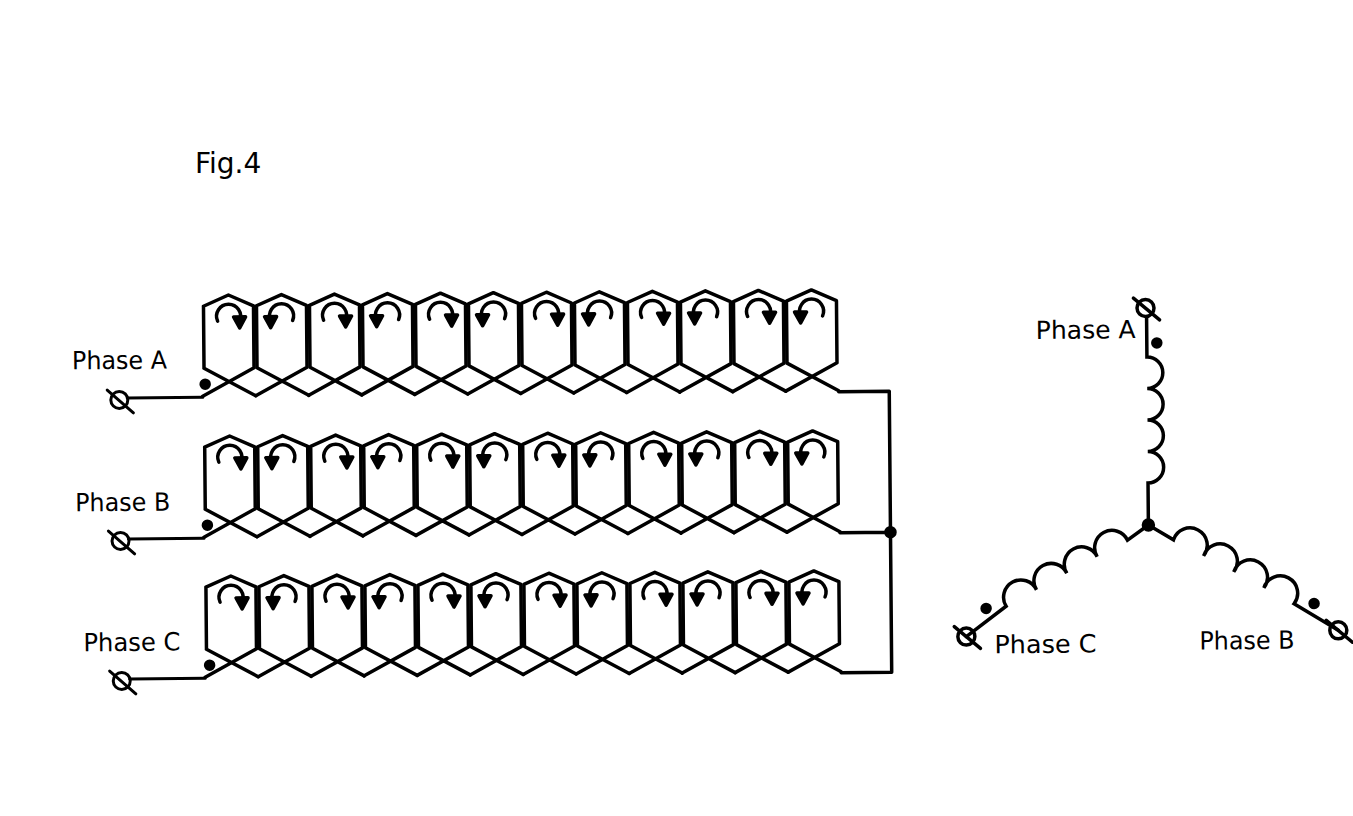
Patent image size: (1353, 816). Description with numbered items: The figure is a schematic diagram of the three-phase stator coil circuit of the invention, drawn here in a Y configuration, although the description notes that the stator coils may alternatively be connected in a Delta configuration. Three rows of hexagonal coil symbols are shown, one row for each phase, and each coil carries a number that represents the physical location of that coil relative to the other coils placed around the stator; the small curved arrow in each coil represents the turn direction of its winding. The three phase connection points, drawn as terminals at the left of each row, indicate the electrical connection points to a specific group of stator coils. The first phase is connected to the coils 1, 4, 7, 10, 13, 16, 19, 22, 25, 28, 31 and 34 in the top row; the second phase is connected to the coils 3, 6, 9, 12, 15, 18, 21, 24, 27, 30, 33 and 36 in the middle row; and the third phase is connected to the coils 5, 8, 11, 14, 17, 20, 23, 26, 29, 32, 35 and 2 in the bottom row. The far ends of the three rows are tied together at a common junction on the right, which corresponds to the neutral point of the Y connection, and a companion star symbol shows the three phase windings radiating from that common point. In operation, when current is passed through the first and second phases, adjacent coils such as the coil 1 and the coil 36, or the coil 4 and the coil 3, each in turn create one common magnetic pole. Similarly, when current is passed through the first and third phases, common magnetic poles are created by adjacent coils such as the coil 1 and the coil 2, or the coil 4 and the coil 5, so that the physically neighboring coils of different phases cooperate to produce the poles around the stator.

The stator coil 1 is at (229, 345).
The stator coil 2 is at (814, 621).
The stator coil 3 is at (230, 486).
The stator coil 4 is at (282, 344).
The stator coil 5 is at (231, 626).
The stator coil 6 is at (283, 485).
The stator coil 7 is at (335, 344).
The stator coil 8 is at (284, 625).
The stator coil 9 is at (336, 485).
The stator coil 10 is at (388, 343).
The stator coil 11 is at (337, 625).
The stator coil 12 is at (389, 484).
The stator coil 13 is at (441, 343).
The stator coil 14 is at (390, 624).
The stator coil 15 is at (442, 484).
The stator coil 16 is at (494, 342).
The stator coil 17 is at (443, 624).
The stator coil 18 is at (495, 483).
The stator coil 19 is at (547, 342).
The stator coil 20 is at (496, 623).
The stator coil 21 is at (548, 483).
The stator coil 22 is at (600, 342).
The stator coil 23 is at (549, 623).
The stator coil 24 is at (601, 483).
The stator coil 25 is at (653, 341).
The stator coil 26 is at (602, 623).
The stator coil 27 is at (654, 482).
The stator coil 28 is at (706, 341).
The stator coil 29 is at (655, 622).
The stator coil 30 is at (707, 482).
The stator coil 31 is at (759, 340).
The stator coil 32 is at (708, 622).
The stator coil 33 is at (760, 481).
The stator coil 34 is at (812, 340).
The stator coil 35 is at (761, 621).
The stator coil 36 is at (813, 481).